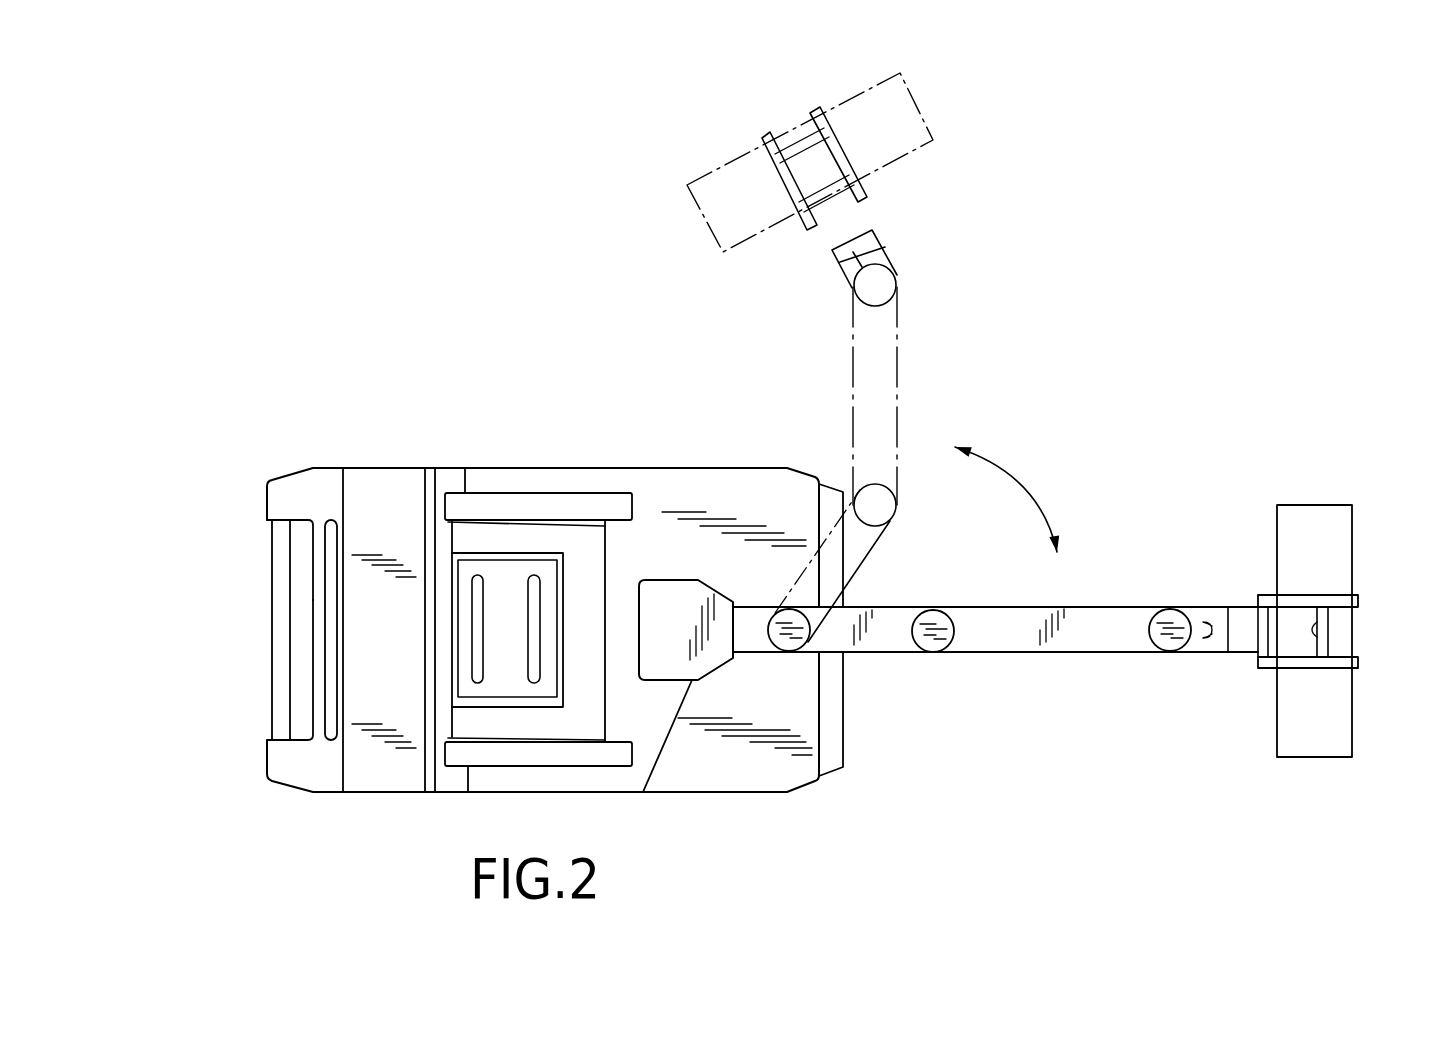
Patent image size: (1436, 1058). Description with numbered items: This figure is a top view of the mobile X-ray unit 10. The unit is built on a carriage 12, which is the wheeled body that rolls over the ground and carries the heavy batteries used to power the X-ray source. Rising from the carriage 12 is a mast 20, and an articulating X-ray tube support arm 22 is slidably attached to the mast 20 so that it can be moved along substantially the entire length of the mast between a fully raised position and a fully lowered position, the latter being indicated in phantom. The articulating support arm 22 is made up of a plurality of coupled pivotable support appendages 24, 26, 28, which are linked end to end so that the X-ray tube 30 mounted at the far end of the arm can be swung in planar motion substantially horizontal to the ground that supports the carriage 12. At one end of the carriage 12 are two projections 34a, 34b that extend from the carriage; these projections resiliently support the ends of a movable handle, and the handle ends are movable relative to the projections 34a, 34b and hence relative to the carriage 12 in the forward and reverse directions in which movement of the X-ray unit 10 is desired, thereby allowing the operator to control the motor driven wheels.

The mobile X-ray unit 10 is at (490, 447).
The carriage 12 is at (538, 795).
The mast 20 is at (702, 668).
The articulating X-ray tube support arm 22 is at (1057, 684).
The pivotable support appendage 24 is at (857, 607).
The pivotable support appendage 26 is at (987, 607).
The pivotable support appendage 28 is at (1223, 612).
The X-ray tube 30 is at (1352, 722).
The projection 34a is at (265, 492).
The projection 34b is at (265, 760).